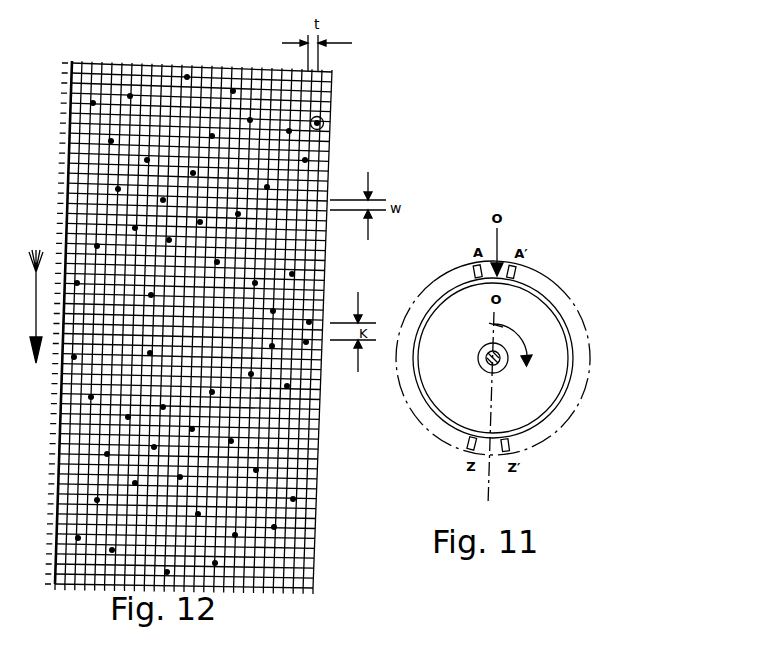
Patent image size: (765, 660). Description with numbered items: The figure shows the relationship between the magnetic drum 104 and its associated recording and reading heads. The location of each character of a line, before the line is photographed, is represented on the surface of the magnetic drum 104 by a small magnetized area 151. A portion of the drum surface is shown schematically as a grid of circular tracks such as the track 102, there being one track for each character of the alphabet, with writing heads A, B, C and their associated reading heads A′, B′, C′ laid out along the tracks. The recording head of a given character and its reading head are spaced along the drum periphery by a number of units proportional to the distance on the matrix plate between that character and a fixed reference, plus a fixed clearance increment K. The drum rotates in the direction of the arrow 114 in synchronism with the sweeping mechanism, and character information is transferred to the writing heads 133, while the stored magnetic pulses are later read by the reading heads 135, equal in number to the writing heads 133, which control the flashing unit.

In FIG. 12, the magnetic drum 104 is at (318, 512).
In FIG. 11, the magnetic drum 104 is at (540, 407).
In FIG. 12, the circular track 102 is at (298, 412).
In FIG. 12, the magnetized area 151 is at (324, 121).
In FIG. 12, the arrow 114 is at (36, 318).
In FIG. 11, the reading heads 135 is at (428, 288).
In FIG. 11, the writing heads 133 is at (557, 284).